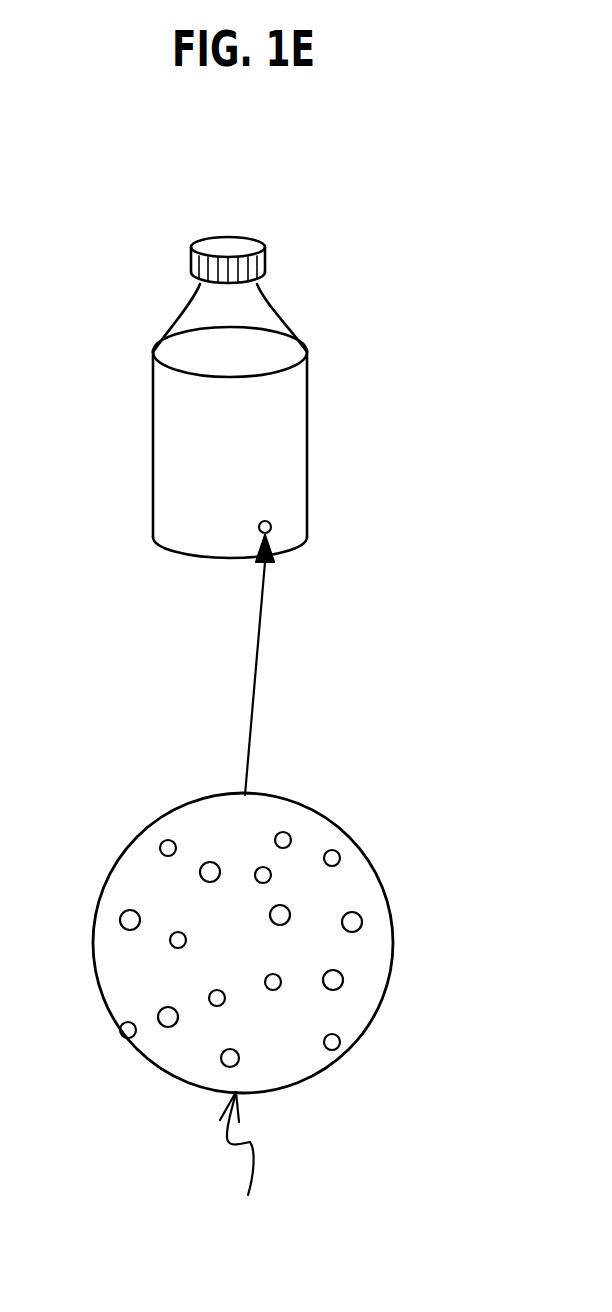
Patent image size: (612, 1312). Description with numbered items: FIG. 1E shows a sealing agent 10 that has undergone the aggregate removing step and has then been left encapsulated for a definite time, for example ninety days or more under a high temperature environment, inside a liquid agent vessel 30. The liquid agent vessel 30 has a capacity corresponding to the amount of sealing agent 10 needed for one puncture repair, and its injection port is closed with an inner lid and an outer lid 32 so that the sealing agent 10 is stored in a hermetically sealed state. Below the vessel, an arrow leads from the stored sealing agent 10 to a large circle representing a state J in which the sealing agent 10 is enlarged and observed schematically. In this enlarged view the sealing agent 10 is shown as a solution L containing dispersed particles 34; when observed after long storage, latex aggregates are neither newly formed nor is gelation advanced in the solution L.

The sealing agent 10 is at (278, 343).
The outer lid 32 is at (266, 260).
The liquid agent vessel 30 is at (312, 530).
The particles 34 is at (123, 914).
The solution L is at (360, 1013).
The state J is at (235, 1167).